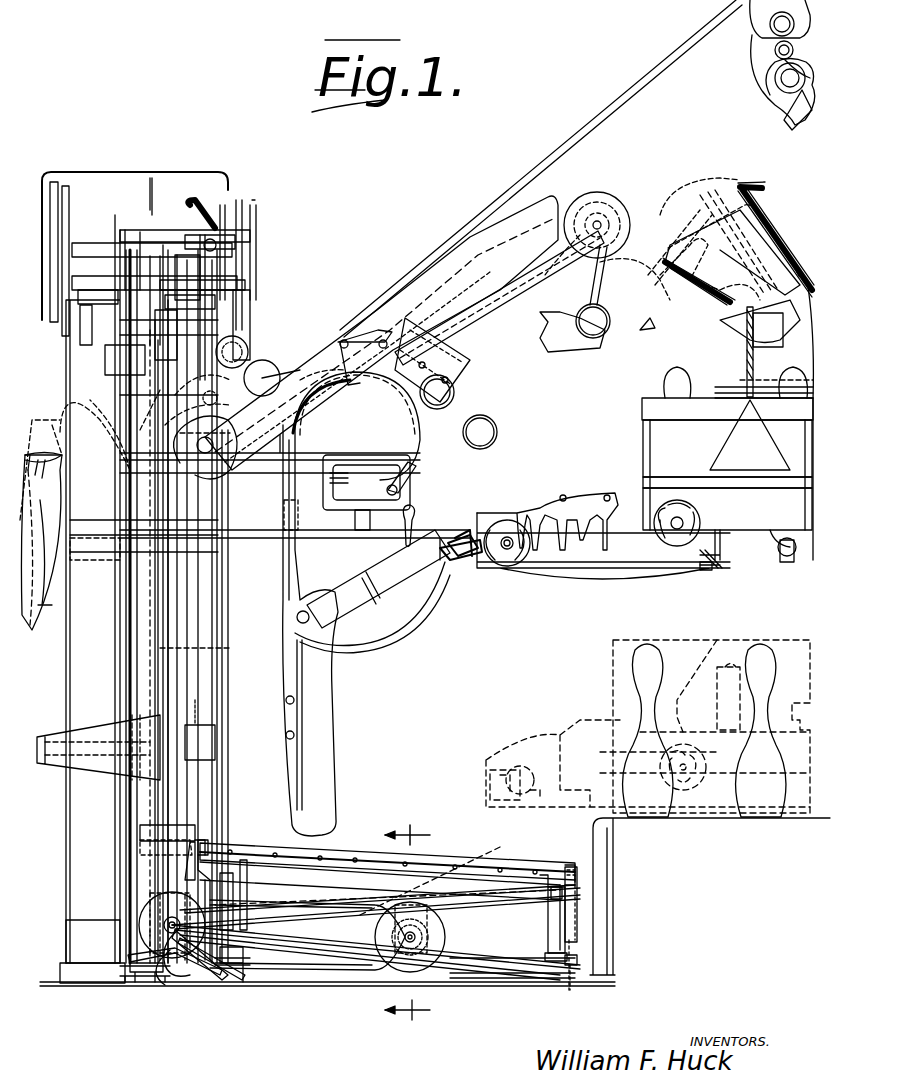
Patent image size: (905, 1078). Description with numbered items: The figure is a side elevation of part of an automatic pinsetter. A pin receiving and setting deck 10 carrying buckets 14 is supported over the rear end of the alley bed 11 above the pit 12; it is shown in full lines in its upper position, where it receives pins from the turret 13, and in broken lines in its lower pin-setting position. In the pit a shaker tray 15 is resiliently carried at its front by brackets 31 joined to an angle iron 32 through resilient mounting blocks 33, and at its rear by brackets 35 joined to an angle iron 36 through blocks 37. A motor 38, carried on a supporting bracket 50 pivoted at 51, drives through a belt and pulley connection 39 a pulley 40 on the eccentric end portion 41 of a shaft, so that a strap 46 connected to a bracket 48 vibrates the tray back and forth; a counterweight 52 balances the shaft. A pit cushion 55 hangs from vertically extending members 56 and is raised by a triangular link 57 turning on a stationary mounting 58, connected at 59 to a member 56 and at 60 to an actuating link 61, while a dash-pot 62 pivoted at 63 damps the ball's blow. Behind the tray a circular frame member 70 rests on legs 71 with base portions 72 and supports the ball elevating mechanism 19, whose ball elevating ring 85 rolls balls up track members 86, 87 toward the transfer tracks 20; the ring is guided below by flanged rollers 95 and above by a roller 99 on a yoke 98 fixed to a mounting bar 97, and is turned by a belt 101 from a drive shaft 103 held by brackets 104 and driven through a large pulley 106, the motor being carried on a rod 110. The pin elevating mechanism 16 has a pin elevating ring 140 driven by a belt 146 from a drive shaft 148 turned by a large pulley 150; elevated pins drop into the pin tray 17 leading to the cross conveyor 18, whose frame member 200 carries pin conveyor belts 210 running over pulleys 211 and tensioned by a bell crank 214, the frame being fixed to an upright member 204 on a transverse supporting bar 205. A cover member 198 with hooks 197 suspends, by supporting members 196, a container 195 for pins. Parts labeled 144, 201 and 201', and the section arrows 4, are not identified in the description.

The large pulley 150 is at (62, 200).
The drive shaft 148 is at (90, 245).
The cover member 198 is at (100, 212).
The hooks 197 is at (98, 317).
The pin elevating ring 140 is at (108, 678).
The large pulley 106 is at (252, 215).
The drive shaft 103 is at (215, 245).
The brackets 104 is at (220, 290).
The mounting bar 97 is at (218, 300).
The yoke 98 is at (230, 330).
The rod 110 is at (240, 342).
The flanged roller 99 is at (230, 400).
The pin receiving tray 17 is at (40, 445).
The elongated supporting members 196 is at (60, 433).
The pin elevating mechanism 16 is at (80, 643).
The drive belt 146 is at (125, 580).
The container 195 is at (40, 605).
The belt 101 is at (175, 590).
The circular frame member 70 is at (155, 610).
The ball track member 86 is at (212, 623).
The ball track member 87 is at (207, 645).
The ball elevating mechanism 19 is at (230, 665).
The ball elevating ring 85 is at (185, 700).
The base frame 144 is at (60, 985).
The actuating link 61 is at (497, 211).
The cross conveyor mechanism 18 is at (402, 270).
The pin conveyor belts 210 is at (528, 300).
The pivotal connection 60 is at (343, 340).
The stationary pivotal mounting 58 is at (432, 363).
The pivotal connection 59 is at (398, 412).
The triangular shaped link 57 is at (372, 372).
The bell crank 214 is at (300, 437).
The transfer tracks 20 is at (385, 448).
The vertically extending members 56 is at (292, 572).
The dash-pot 62 is at (403, 570).
The pivotal connection 63 is at (318, 626).
The pit cushion 55 is at (318, 752).
The complementary pulleys 211 is at (593, 205).
The upright supporting member 204 is at (640, 300).
The supporting bar 205 is at (605, 308).
The turret 13 is at (741, 170).
The frame member 200 is at (772, 210).
The pin gripper arm 201 is at (733, 254).
The gripper arm alternate position 201' is at (705, 242).
The buckets 14 is at (643, 445).
The pin receiving and setting deck 10 is at (608, 558).
The bowling alley bed 11 is at (700, 896).
The shaker tray 15 is at (448, 862).
The section line 4 is at (418, 922).
The counterweight 52 is at (385, 871).
The pit 12 is at (490, 947).
The resilient mounting blocks 33 is at (556, 890).
The brackets 31 is at (545, 916).
The supporting angle iron 32 is at (565, 965).
The eccentric end portion 41 is at (415, 970).
The pulley 40 is at (405, 960).
The strap 46 is at (350, 935).
The bracket 48 is at (300, 915).
The resilient mounting blocks 37 is at (235, 890).
The brackets 35 is at (238, 903).
The flanged guide rollers 95 is at (200, 893).
The supporting legs 71 is at (135, 975).
The flat base portion 72 is at (145, 985).
The belt and pulley connection 39 is at (178, 960).
The supporting bracket 50 is at (178, 985).
The motor 38 is at (198, 975).
The pivot 51 is at (212, 980).
The supporting angle iron 36 is at (226, 975).